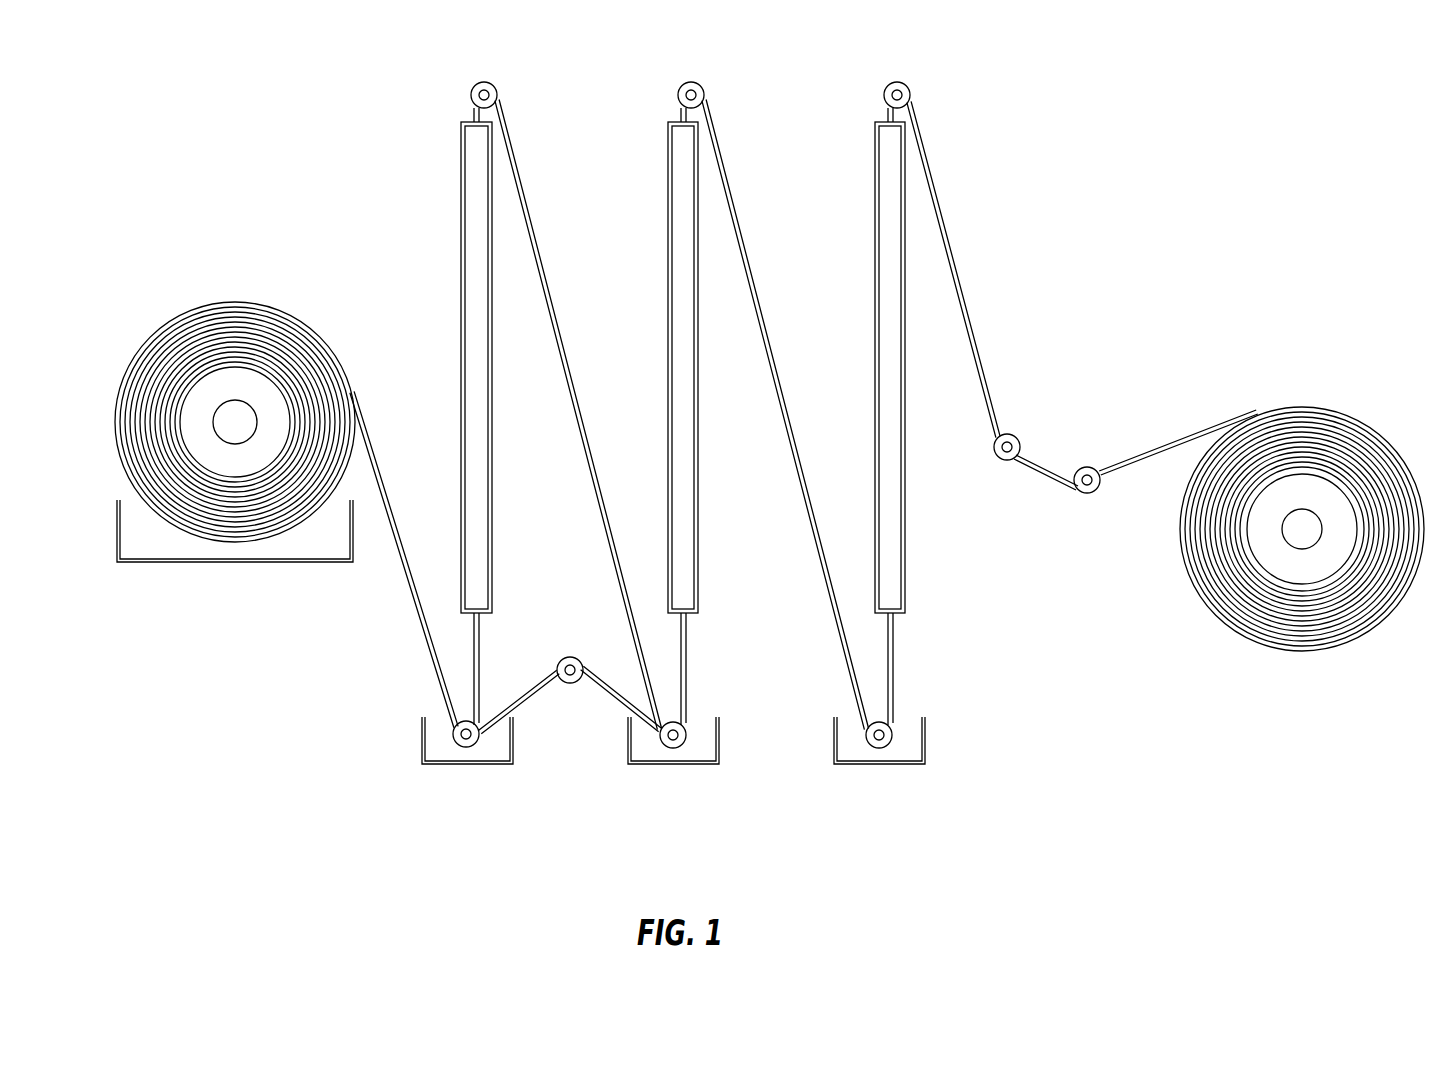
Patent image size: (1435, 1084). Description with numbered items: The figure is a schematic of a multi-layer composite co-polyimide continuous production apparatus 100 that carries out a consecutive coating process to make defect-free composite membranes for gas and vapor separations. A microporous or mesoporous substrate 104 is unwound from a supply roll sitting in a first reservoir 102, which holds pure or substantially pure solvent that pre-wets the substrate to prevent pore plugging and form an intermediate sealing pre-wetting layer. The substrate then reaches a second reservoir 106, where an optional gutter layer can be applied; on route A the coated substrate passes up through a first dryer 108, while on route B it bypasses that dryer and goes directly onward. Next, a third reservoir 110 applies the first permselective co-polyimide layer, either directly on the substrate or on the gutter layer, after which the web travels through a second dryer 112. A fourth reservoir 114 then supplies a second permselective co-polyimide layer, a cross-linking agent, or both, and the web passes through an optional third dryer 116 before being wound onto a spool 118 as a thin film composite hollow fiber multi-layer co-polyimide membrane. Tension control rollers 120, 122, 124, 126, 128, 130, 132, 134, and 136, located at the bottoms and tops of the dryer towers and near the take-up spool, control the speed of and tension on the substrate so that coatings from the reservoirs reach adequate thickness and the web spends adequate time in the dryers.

The multi-layer composite co-polyimide continuous production apparatus 100 is at (240, 92).
The first reservoir 102 is at (177, 565).
The microporous or mesoporous substrate 104 is at (190, 310).
The second reservoir 106 is at (420, 738).
The first dryer 108 is at (460, 332).
The third reservoir 110 is at (720, 735).
The second dryer 112 is at (668, 332).
The fourth reservoir 114 is at (926, 740).
The third dryer 116 is at (875, 332).
The spool 118 is at (1330, 410).
The tension control roller 120 is at (466, 748).
The tension control roller 122 is at (573, 684).
The tension control roller 124 is at (672, 749).
The tension control roller 126 is at (877, 749).
The tension control roller 128 is at (495, 85).
The tension control roller 130 is at (702, 85).
The tension control roller 132 is at (908, 85).
The tension control roller 134 is at (1017, 434).
The tension control roller 136 is at (1085, 494).